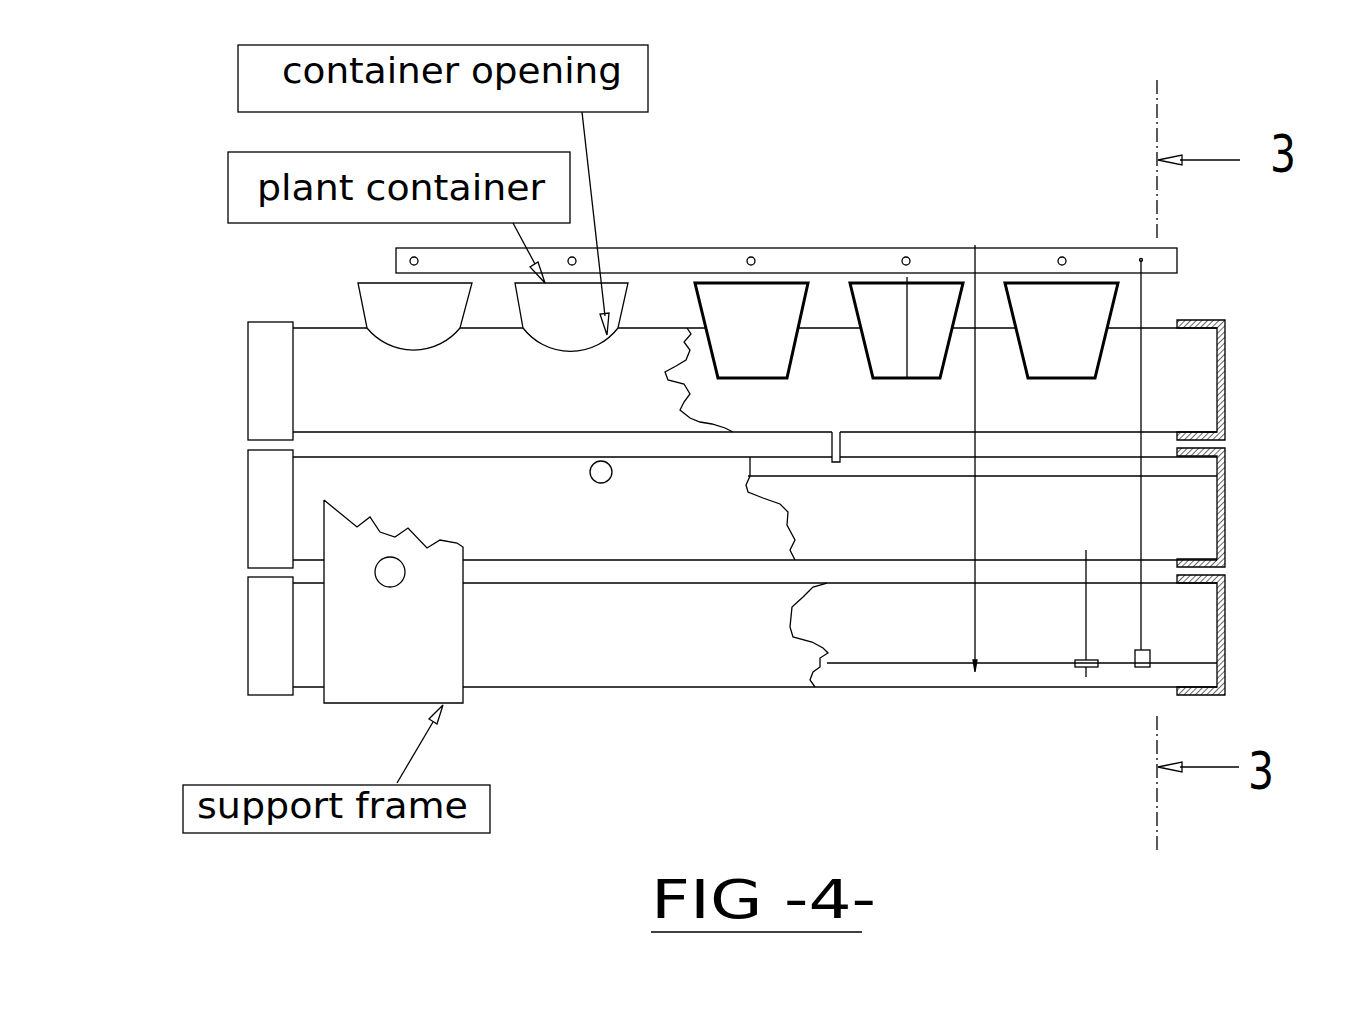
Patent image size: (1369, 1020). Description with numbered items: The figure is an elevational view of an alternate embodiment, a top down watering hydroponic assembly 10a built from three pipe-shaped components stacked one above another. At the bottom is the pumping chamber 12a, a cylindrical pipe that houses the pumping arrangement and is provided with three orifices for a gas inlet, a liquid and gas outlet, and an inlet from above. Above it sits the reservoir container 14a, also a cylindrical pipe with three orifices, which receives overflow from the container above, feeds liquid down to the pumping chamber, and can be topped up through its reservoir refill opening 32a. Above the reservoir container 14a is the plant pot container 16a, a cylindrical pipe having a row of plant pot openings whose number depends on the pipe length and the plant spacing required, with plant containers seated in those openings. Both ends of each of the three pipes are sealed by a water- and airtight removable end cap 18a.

The top down watering hydroponic assembly 10a is at (767, 368).
The pumping chamber 12a is at (497, 693).
The reservoir container 14a is at (562, 557).
The plant pot container 16a is at (648, 430).
The removable end cap 18a is at (250, 365).
The reservoir refill opening 32a is at (604, 461).